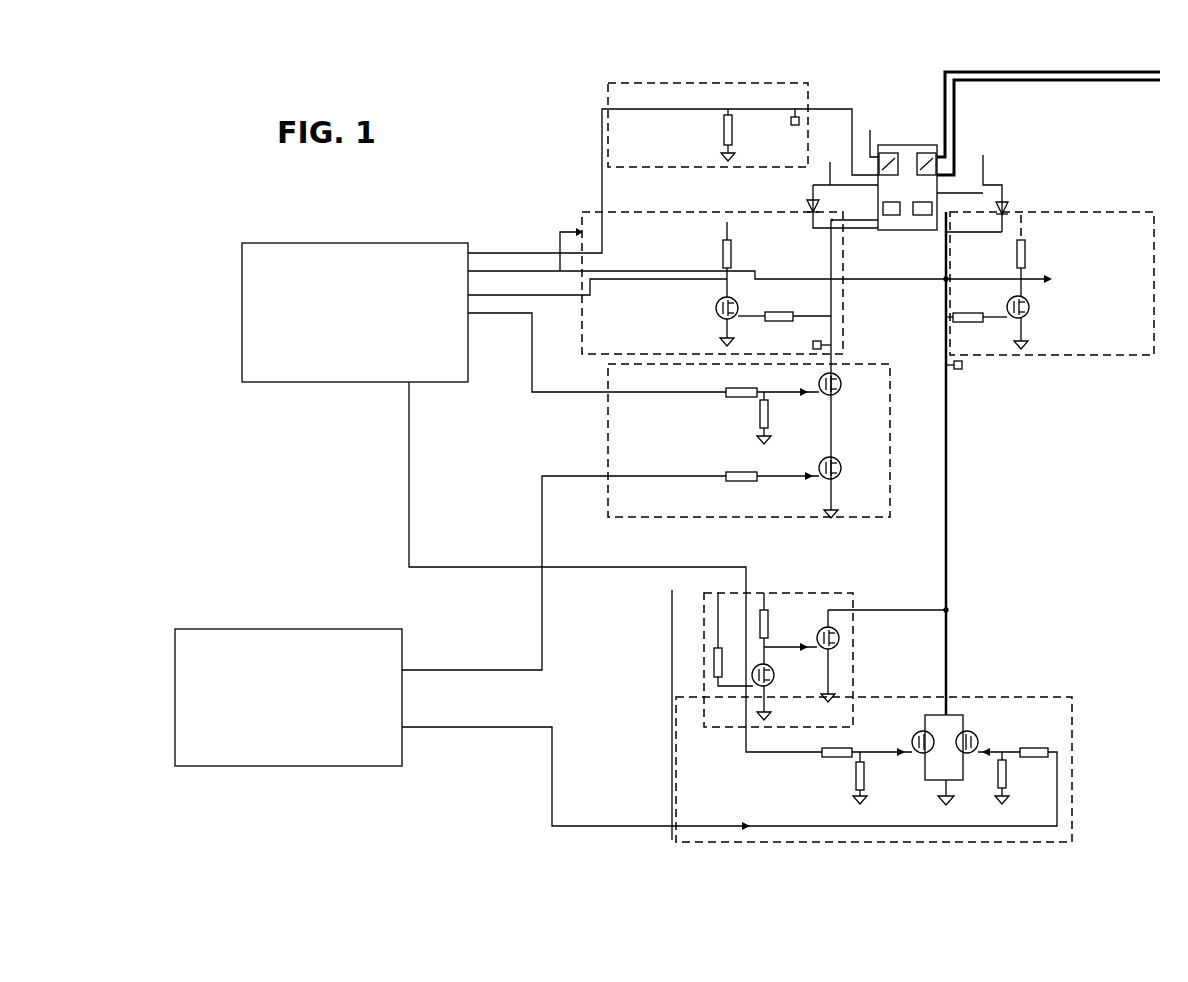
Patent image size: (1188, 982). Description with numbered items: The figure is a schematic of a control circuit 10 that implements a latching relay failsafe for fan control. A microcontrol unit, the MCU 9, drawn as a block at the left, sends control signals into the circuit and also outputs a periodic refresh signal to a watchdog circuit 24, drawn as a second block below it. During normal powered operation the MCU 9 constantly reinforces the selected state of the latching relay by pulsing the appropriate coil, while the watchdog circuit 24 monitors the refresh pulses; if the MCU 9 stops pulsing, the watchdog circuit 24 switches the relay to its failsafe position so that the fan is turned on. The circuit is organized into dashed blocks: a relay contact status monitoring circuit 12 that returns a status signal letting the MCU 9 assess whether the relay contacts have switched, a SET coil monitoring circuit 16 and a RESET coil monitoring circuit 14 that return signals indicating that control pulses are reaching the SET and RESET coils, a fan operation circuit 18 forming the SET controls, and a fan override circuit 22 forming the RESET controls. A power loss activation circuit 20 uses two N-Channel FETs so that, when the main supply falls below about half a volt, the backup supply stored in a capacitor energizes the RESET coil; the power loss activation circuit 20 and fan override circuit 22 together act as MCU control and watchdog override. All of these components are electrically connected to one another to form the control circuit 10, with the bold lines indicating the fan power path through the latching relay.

The microcontrol unit (MCU) 9 is at (355, 297).
The control circuit 10 is at (781, 446).
The relay contact status monitoring circuit 12 is at (693, 125).
The RESET coil monitoring circuit 14 is at (1057, 276).
The SET coil monitoring circuit 16 is at (695, 283).
The fan operation circuit 18 is at (702, 462).
The power loss activation circuit 20 is at (736, 646).
The fan override circuit 22 is at (817, 756).
The watchdog circuit 24 is at (288, 683).